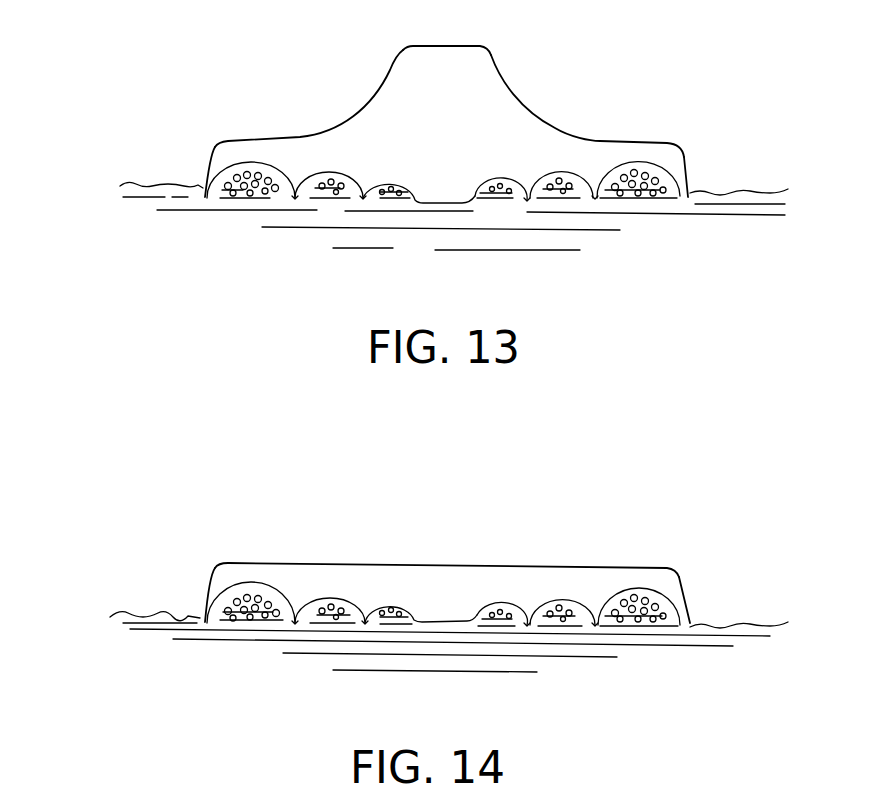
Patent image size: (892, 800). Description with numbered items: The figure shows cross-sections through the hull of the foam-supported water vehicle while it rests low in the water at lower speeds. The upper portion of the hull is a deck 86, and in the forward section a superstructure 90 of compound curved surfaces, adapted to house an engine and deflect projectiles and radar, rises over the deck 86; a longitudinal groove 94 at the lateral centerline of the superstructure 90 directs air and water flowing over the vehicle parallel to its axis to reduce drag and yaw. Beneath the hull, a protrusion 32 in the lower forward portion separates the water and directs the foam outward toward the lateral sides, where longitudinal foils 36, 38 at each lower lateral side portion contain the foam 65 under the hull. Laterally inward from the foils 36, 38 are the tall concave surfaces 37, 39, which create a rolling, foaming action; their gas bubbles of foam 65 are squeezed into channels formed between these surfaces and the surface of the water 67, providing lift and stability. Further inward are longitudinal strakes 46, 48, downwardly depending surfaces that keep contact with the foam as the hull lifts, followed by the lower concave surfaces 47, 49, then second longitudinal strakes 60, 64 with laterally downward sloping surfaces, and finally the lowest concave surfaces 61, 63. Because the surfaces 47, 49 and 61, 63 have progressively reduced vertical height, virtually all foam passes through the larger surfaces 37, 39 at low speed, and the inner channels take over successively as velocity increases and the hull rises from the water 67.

In FIG. 13, the protrusion 32 is at (450, 195).
In FIG. 14, the protrusion 32 is at (438, 613).
In FIG. 13, the longitudinal foil 36 is at (207, 198).
In FIG. 14, the longitudinal foil 36 is at (205, 623).
In FIG. 13, the concave surface 37 is at (249, 162).
In FIG. 14, the concave surface 37 is at (257, 582).
In FIG. 13, the longitudinal foil 38 is at (688, 197).
In FIG. 14, the longitudinal foil 38 is at (687, 628).
In FIG. 13, the concave surface 39 is at (640, 163).
In FIG. 14, the concave surface 39 is at (647, 588).
In FIG. 13, the longitudinal strake 46 is at (295, 198).
In FIG. 14, the longitudinal strake 46 is at (295, 623).
In FIG. 13, the concave surface 47 is at (332, 172).
In FIG. 14, the concave surface 47 is at (332, 598).
In FIG. 13, the longitudinal strake 48 is at (593, 198).
In FIG. 14, the longitudinal strake 48 is at (595, 625).
In FIG. 13, the concave surface 49 is at (560, 172).
In FIG. 14, the concave surface 49 is at (563, 600).
In FIG. 13, the second longitudinal strake 60 is at (363, 200).
In FIG. 14, the second longitudinal strake 60 is at (366, 623).
In FIG. 13, the concave surface 61 is at (393, 180).
In FIG. 14, the concave surface 61 is at (397, 605).
In FIG. 13, the concave surface 63 is at (505, 180).
In FIG. 14, the concave surface 63 is at (507, 607).
In FIG. 13, the second longitudinal strake 64 is at (527, 200).
In FIG. 14, the second longitudinal strake 64 is at (527, 625).
In FIG. 13, the foam 65 is at (249, 180).
In FIG. 14, the foam 65 is at (252, 605).
In FIG. 13, the surface of the water 67 is at (178, 187).
In FIG. 14, the surface of the water 67 is at (175, 612).
In FIG. 13, the deck 86 is at (276, 140).
In FIG. 14, the deck 86 is at (605, 564).
In FIG. 13, the superstructure 90 is at (517, 85).
In FIG. 13, the longitudinal groove 94 is at (458, 47).